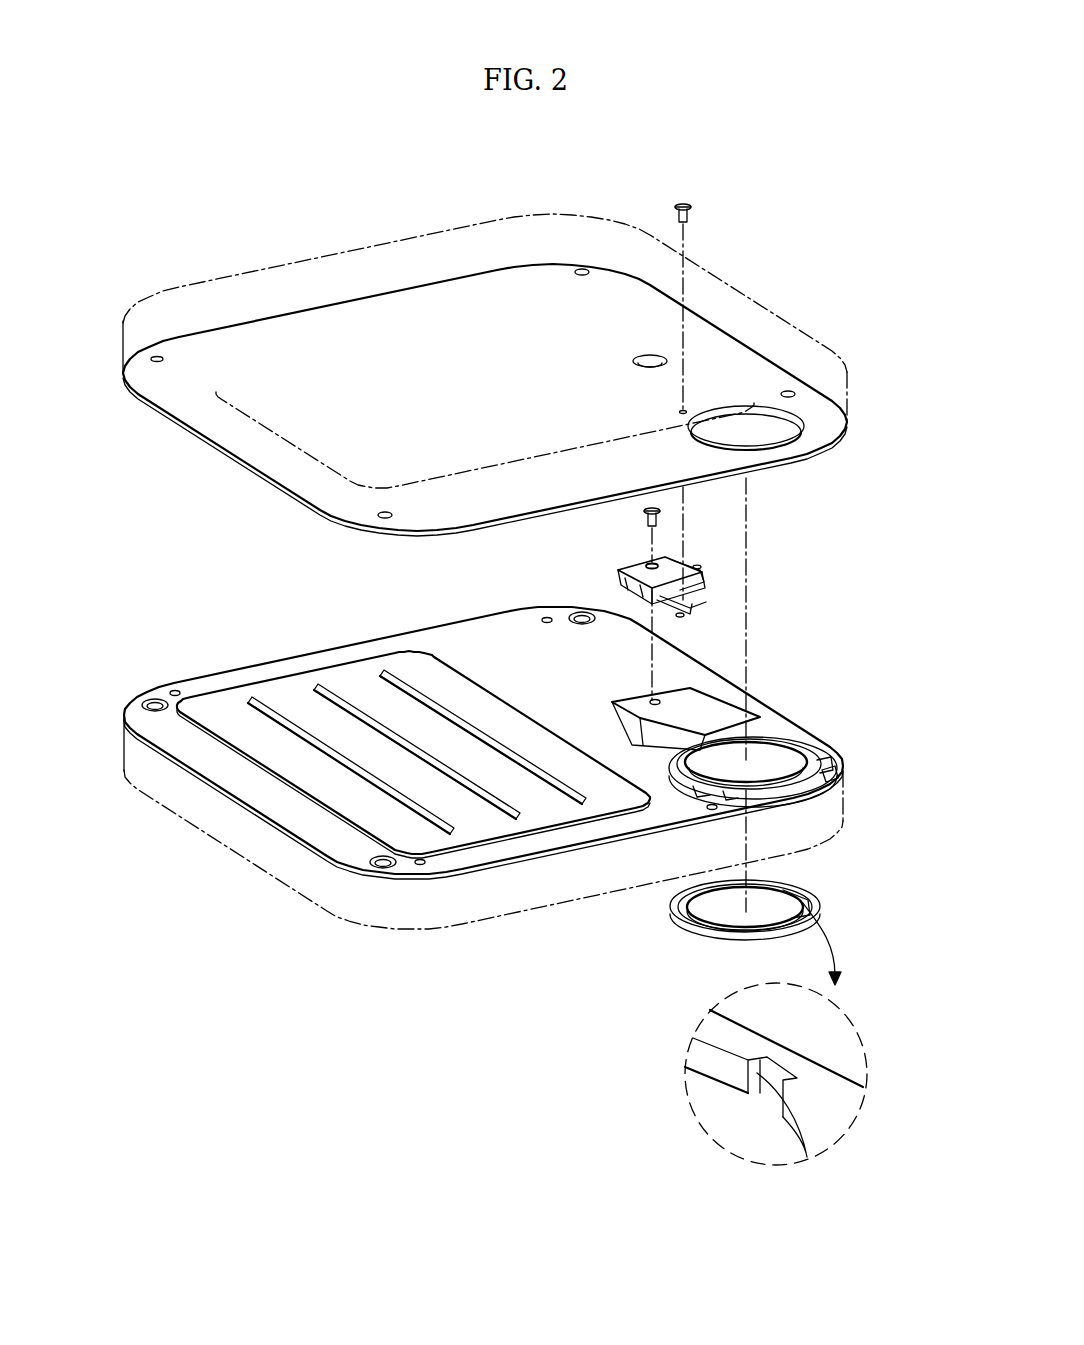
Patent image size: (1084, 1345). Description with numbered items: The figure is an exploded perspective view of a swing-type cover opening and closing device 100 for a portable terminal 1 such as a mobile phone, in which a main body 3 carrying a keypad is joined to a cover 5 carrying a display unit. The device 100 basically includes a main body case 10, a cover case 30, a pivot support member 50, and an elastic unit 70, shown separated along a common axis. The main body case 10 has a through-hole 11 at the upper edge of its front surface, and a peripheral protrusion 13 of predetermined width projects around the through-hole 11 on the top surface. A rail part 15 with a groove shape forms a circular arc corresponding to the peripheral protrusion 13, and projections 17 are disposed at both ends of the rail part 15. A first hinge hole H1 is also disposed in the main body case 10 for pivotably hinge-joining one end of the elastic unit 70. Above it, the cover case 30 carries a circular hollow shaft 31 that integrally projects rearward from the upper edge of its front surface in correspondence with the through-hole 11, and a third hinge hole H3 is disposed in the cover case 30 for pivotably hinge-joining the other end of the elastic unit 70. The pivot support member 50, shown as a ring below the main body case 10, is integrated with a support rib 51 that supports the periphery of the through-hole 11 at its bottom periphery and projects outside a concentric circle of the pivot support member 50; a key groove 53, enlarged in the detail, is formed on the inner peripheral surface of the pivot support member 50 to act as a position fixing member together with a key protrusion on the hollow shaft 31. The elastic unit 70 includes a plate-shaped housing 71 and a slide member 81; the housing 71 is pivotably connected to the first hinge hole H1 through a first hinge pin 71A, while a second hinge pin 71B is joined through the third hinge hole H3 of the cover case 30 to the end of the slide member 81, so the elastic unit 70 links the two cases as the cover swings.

The swing-type cover opening and closing device 100 is at (529, 173).
The portable terminal 1 is at (905, 530).
The main body 3 is at (846, 838).
The cover 5 is at (846, 396).
The main body case 10 is at (214, 857).
The through-hole 11 is at (770, 758).
The peripheral protrusion 13 is at (722, 745).
The rail part 15 is at (822, 778).
The projections 17 is at (816, 770).
The cover case 30 is at (205, 452).
The circular hollow shaft 31 is at (760, 412).
The pivot support member 50 is at (676, 938).
The support rib 51 is at (717, 950).
The key groove 53 is at (778, 1082).
The elastic unit 70 is at (610, 572).
The housing 71 is at (700, 578).
The first hinge pin 71A is at (650, 512).
The second hinge pin 71B is at (687, 204).
The slide member 81 is at (692, 612).
The first hinge hole H1 is at (660, 701).
The third hinge hole H3 is at (684, 408).